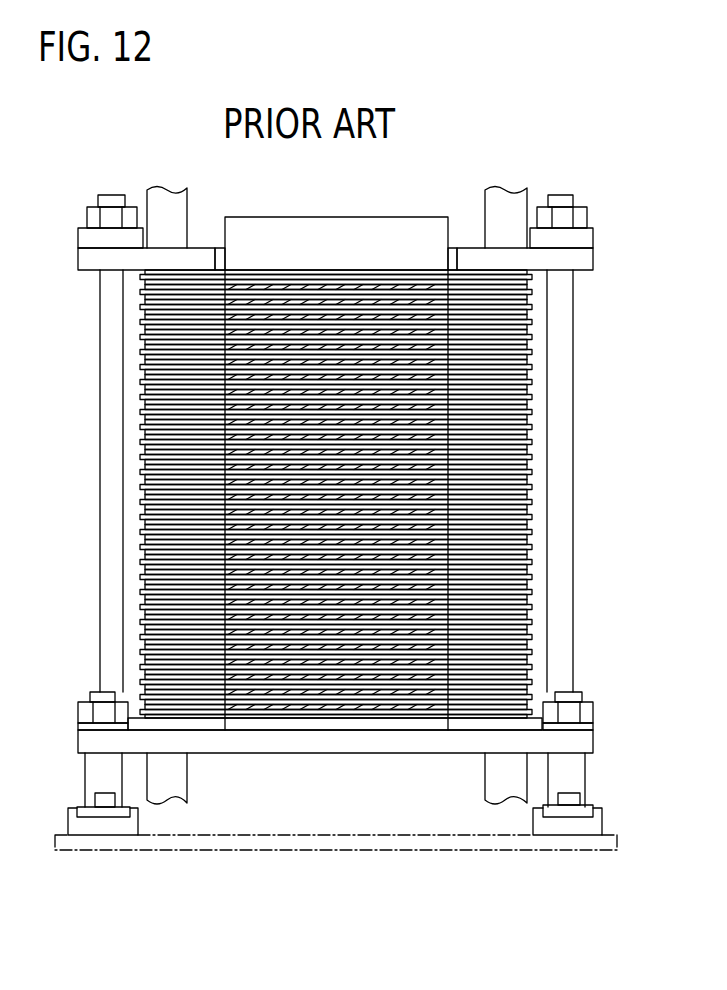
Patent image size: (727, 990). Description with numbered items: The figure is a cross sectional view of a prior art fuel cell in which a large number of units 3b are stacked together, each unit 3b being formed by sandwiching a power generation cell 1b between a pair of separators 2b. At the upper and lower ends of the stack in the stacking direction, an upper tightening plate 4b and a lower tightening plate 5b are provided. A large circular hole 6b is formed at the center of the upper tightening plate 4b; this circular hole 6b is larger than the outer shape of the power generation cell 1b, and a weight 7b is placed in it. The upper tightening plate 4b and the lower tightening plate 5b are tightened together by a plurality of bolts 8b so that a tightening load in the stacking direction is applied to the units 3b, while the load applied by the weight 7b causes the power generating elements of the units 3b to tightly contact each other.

The power generation cell 1b is at (437, 488).
The separator 2b is at (487, 463).
The unit 3b is at (401, 494).
The upper tightening plate 4b is at (583, 258).
The lower tightening plate 5b is at (580, 742).
The circular hole 6b is at (222, 248).
The weight 7b is at (280, 217).
The bolt 8b is at (562, 388).